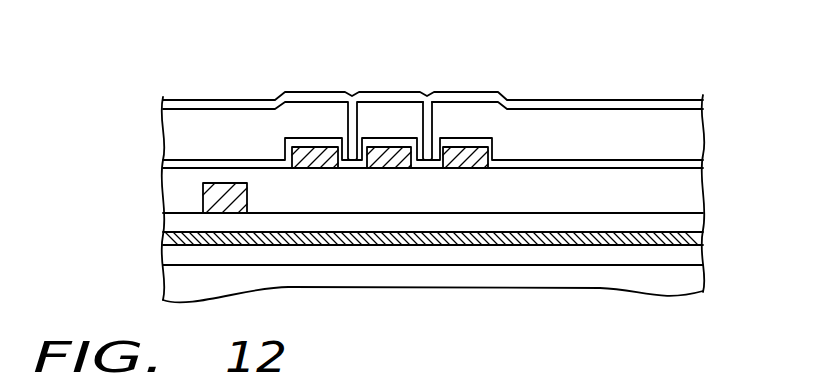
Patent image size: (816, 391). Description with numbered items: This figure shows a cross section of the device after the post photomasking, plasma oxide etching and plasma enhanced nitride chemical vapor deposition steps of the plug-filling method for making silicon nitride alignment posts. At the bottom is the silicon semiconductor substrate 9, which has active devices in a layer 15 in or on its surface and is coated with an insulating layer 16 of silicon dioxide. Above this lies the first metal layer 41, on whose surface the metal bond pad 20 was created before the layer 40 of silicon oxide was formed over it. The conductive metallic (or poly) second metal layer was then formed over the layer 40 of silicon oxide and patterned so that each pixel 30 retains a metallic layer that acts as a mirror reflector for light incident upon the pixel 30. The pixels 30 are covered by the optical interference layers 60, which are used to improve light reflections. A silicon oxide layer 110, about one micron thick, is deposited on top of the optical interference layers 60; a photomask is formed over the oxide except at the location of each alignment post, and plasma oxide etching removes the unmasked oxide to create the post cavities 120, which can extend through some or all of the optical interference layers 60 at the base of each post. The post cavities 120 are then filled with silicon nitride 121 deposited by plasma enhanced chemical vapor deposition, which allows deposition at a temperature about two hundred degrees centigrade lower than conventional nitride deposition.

The substrate 9 is at (690, 283).
The active device layer 15 is at (695, 252).
The insulating layer of silicon dioxide 16 is at (700, 237).
The metal bond pad 20 is at (203, 200).
The pixel 30 is at (383, 148).
The layer of silicon oxide 40 is at (692, 193).
The first metal layer 41 is at (170, 224).
The optical interference layers 60 is at (313, 143).
The silicon oxide layer 110 is at (175, 142).
The post cavities 120 is at (428, 120).
The silicon nitride 121 is at (247, 103).